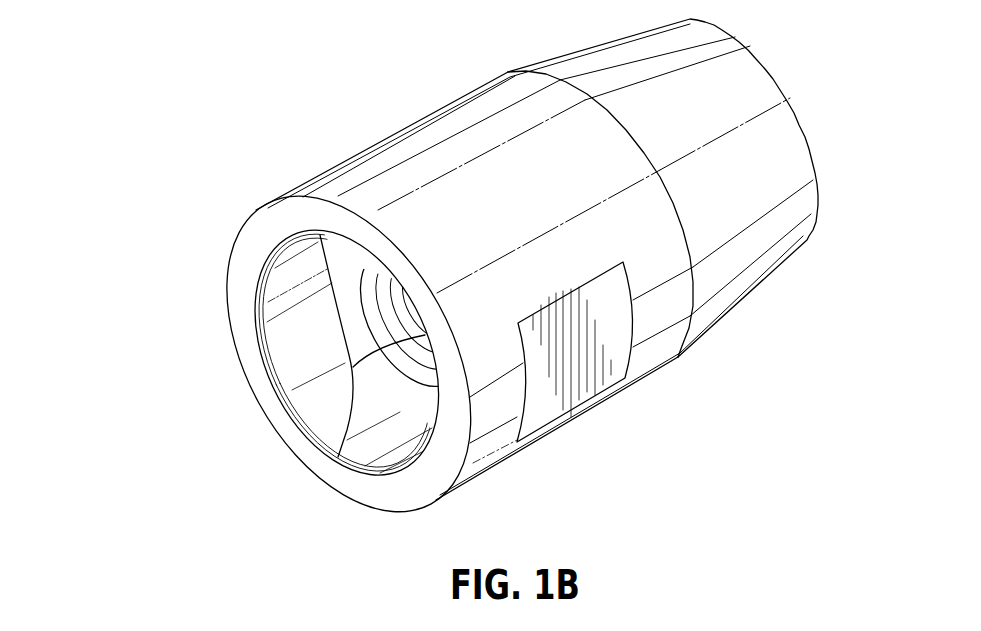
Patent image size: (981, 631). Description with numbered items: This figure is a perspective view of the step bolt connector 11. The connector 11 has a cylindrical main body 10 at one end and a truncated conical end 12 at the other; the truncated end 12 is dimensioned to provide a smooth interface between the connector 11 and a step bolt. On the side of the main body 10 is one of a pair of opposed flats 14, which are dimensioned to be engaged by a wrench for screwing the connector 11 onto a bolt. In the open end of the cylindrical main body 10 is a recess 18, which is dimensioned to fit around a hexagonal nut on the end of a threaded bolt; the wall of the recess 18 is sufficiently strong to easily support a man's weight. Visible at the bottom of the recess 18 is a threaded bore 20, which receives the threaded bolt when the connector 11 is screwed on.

The cylindrical main body 10 is at (396, 137).
The step bolt connector 11 is at (182, 320).
The truncated conical end 12 is at (757, 249).
The flat 14 is at (584, 386).
The recess 18 is at (291, 349).
The threaded bore 20 is at (400, 400).